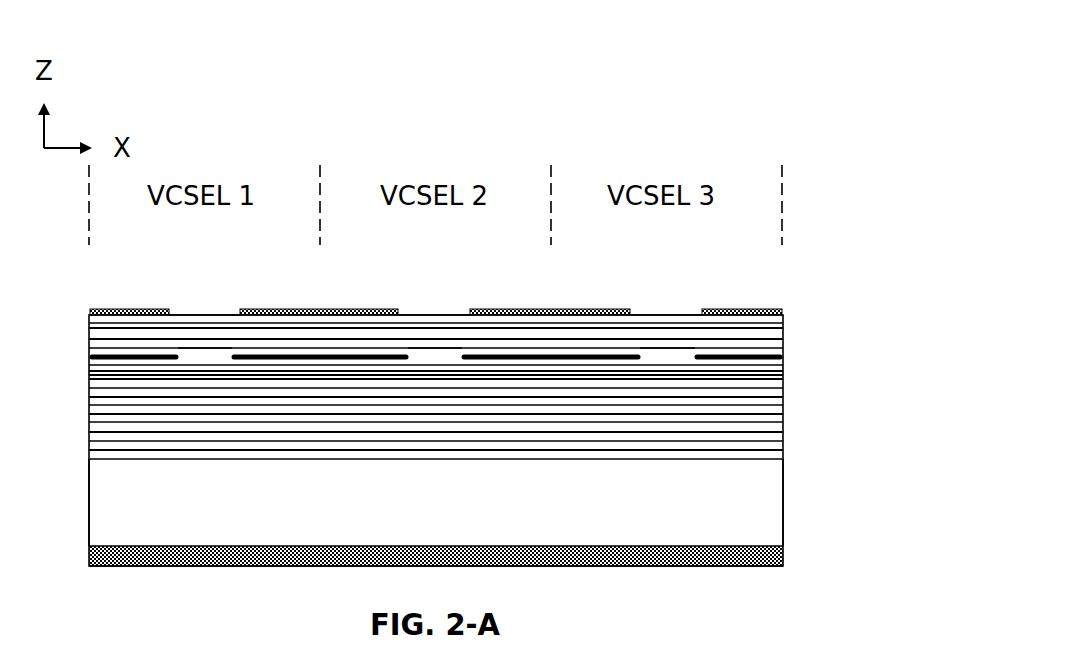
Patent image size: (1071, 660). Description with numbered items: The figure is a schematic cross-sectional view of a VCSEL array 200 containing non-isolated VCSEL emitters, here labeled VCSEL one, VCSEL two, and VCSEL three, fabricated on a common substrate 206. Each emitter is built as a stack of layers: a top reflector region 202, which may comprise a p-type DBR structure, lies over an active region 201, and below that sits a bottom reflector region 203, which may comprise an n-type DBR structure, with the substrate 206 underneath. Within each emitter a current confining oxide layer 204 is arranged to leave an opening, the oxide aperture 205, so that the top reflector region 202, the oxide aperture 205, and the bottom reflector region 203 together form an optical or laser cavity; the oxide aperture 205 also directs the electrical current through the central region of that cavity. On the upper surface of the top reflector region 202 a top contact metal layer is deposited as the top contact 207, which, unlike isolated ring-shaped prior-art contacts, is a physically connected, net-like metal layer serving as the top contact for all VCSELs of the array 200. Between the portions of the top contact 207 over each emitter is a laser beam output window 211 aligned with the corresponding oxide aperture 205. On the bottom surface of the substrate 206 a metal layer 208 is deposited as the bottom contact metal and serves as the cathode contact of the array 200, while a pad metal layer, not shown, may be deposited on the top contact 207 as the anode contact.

The VCSEL array 200 is at (823, 92).
The active region 201 is at (783, 368).
The top reflector region 202 is at (783, 340).
The bottom reflector region 203 is at (783, 402).
The current confining oxide layer 204 is at (90, 357).
The oxide aperture 205 is at (205, 358).
The substrate 206 is at (767, 479).
The top contact 207 is at (110, 311).
The metal layer 208 is at (573, 566).
The laser beam output window 211 is at (187, 313).